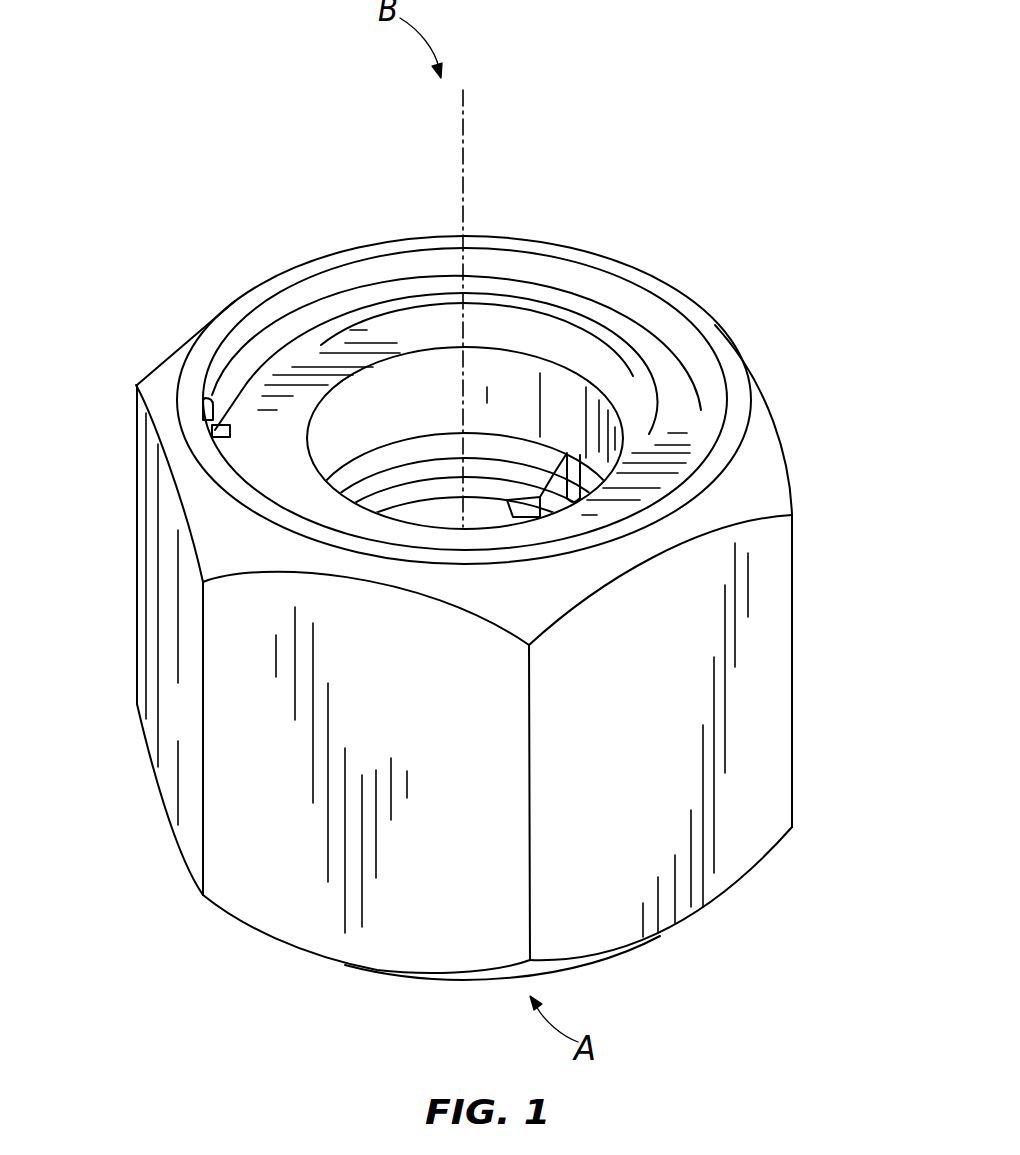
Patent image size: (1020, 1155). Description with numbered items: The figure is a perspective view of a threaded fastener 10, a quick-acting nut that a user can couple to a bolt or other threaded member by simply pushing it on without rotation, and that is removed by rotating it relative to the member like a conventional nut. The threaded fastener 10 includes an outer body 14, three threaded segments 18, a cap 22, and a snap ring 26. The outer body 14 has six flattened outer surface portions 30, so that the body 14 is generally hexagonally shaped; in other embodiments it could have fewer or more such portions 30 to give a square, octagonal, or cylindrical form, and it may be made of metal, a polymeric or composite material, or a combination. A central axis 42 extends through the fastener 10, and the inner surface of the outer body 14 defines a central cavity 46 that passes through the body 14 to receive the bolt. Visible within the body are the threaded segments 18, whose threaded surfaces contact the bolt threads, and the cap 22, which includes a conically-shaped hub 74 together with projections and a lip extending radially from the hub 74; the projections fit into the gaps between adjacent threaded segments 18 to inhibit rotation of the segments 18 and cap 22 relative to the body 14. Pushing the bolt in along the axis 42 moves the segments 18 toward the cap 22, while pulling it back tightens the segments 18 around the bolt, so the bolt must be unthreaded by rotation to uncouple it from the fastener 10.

The threaded fastener 10 is at (684, 122).
The outer body 14 is at (797, 747).
The threaded segments 18 is at (500, 453).
The cap 22 is at (637, 378).
The snap ring 26 is at (303, 317).
The flattened outer surface portions 30 is at (296, 893).
The central axis 42 is at (466, 180).
The central cavity 46 is at (365, 452).
The conically-shaped hub 74 is at (660, 405).